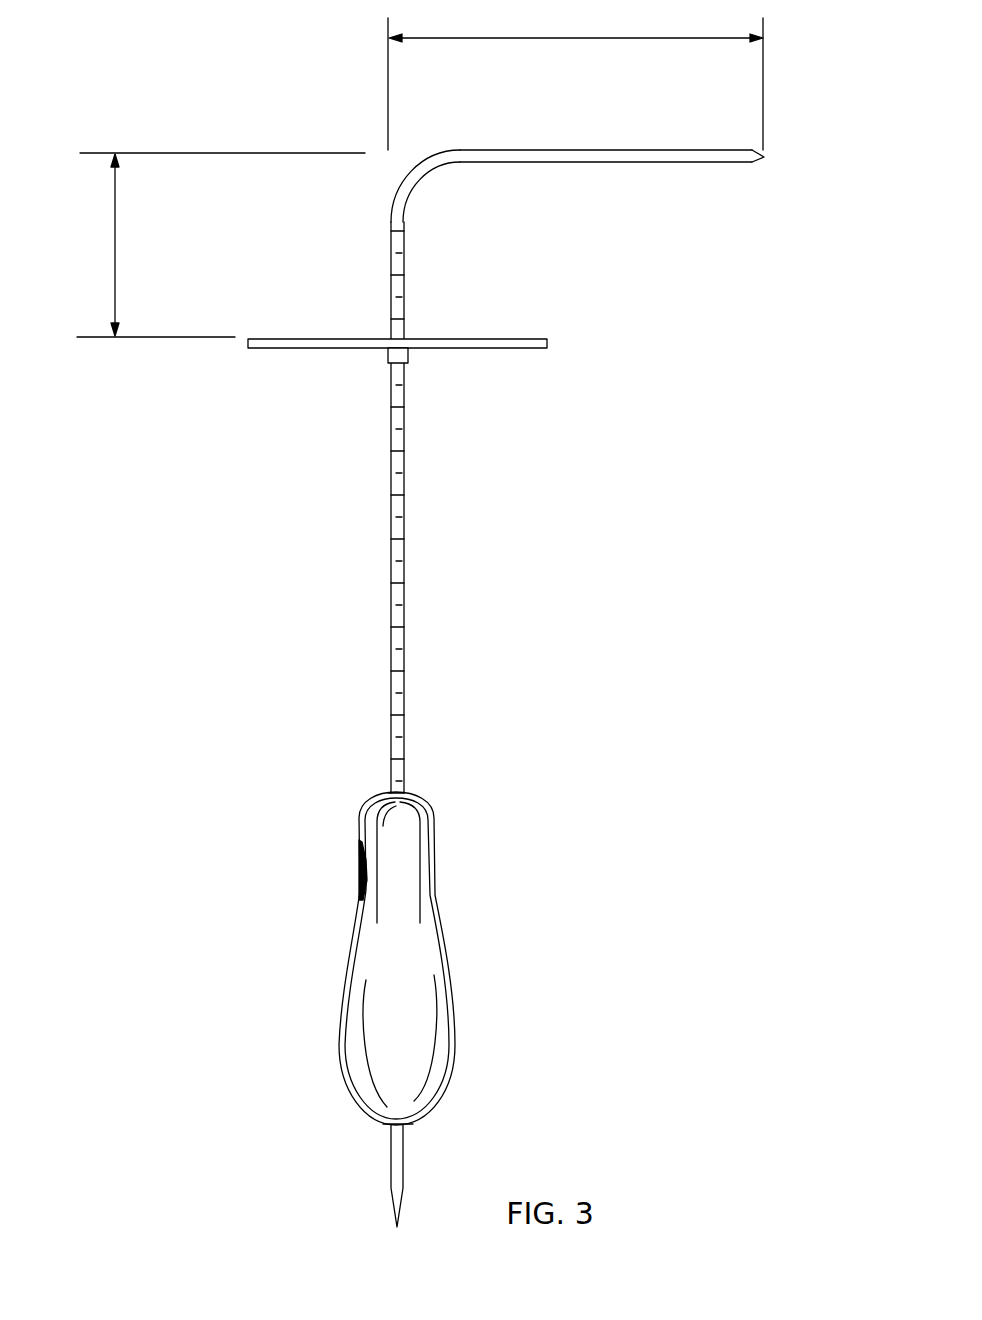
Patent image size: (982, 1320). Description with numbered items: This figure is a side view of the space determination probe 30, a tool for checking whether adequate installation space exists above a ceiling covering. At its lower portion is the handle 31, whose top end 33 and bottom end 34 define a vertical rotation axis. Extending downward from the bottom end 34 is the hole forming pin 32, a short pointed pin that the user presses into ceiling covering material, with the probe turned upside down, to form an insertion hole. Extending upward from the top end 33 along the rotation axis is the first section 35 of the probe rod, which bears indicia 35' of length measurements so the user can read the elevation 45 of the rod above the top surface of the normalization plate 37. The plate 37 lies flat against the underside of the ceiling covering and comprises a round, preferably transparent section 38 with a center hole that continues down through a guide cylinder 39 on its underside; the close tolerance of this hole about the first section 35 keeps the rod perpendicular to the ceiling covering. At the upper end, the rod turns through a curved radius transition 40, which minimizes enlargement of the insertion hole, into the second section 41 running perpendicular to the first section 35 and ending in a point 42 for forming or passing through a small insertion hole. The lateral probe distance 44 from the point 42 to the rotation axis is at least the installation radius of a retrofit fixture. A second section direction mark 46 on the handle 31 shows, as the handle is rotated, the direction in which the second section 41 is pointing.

The space determination probe 30 is at (306, 649).
The handle 31 is at (352, 1022).
The hole forming pin 32 is at (392, 1167).
The top end 33 is at (410, 798).
The bottom end 34 is at (402, 1117).
The first section 35 is at (427, 526).
The indicia 35' is at (337, 506).
The normalization plate 37 is at (266, 323).
The section 38 is at (332, 334).
The guide cylinder 39 is at (406, 355).
The radius transition 40 is at (396, 170).
The second section 41 is at (628, 146).
The point 42 is at (770, 150).
The lateral probe distance 44 is at (575, 75).
The elevation 45 is at (213, 245).
The second section direction mark 46 is at (356, 892).